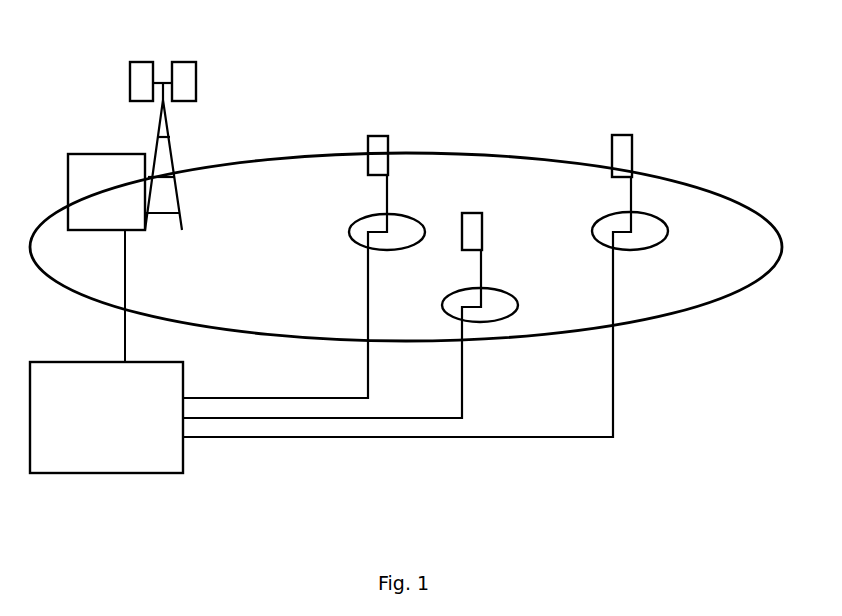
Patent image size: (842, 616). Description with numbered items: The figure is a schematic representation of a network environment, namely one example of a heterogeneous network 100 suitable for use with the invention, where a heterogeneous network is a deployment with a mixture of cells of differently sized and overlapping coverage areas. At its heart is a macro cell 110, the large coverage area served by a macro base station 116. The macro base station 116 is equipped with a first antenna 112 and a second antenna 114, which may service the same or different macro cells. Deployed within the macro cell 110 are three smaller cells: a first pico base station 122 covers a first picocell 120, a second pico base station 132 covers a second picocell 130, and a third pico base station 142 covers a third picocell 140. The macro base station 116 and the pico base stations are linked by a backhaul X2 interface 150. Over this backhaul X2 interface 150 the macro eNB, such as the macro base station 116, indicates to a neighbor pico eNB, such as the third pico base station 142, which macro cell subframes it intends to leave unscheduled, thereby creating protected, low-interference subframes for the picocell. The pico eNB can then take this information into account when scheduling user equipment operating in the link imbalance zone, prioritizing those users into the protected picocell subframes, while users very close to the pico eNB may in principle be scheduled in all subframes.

The heterogeneous network 100 is at (718, 32).
The macro cell 110 is at (707, 307).
The first antenna 112 is at (197, 82).
The second antenna 114 is at (147, 62).
The macro base station 116 is at (100, 154).
The first picocell 120 is at (408, 213).
The first pico base station 122 is at (367, 156).
The second picocell 130 is at (500, 288).
The second pico base station 132 is at (480, 213).
The third picocell 140 is at (650, 212).
The third pico base station 142 is at (614, 135).
The backhaul X2 interface 150 is at (183, 467).